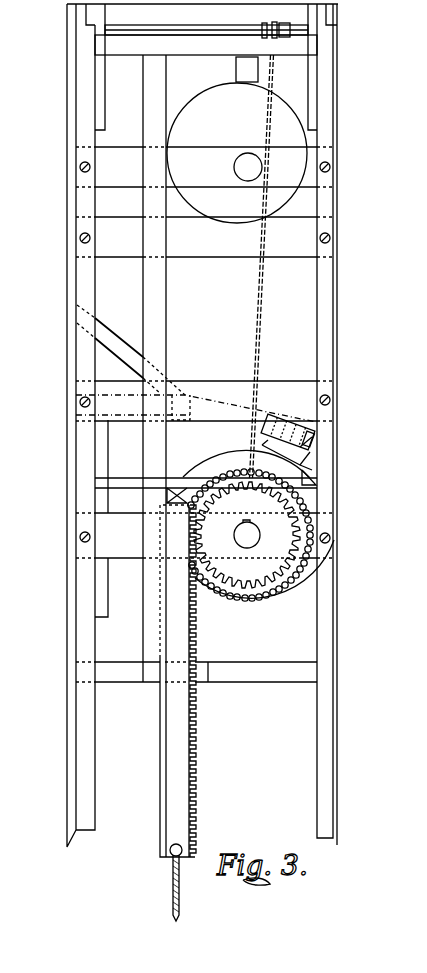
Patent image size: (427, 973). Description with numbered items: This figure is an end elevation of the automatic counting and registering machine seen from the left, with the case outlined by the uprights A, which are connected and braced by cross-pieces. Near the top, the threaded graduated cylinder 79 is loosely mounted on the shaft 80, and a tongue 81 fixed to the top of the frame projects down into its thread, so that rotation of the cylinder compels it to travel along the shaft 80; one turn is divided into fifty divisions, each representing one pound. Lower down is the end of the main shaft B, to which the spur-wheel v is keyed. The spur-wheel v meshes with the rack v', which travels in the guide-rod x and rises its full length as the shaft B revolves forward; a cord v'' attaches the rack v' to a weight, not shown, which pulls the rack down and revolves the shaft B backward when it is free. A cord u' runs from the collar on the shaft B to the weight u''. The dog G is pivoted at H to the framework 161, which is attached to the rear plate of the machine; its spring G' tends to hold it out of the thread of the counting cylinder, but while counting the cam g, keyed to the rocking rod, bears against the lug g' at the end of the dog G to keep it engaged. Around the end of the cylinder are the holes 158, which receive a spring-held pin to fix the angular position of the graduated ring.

The uprights A is at (83, 277).
The guide-rod x is at (163, 312).
The tongue 81 is at (247, 69).
The threaded graduated cylinder 79 is at (237, 153).
The shaft 80 is at (233, 167).
The cord u' is at (270, 250).
The framework 161 is at (105, 333).
The spring G' is at (288, 419).
The pivot H is at (312, 432).
The lug g' is at (345, 442).
The dog G is at (310, 452).
The cam g is at (333, 474).
The weight u'' is at (115, 518).
The holes 158 is at (217, 470).
The spur-wheel v is at (247, 535).
The shaft B is at (260, 535).
The rack v' is at (183, 681).
The cord v'' is at (189, 882).